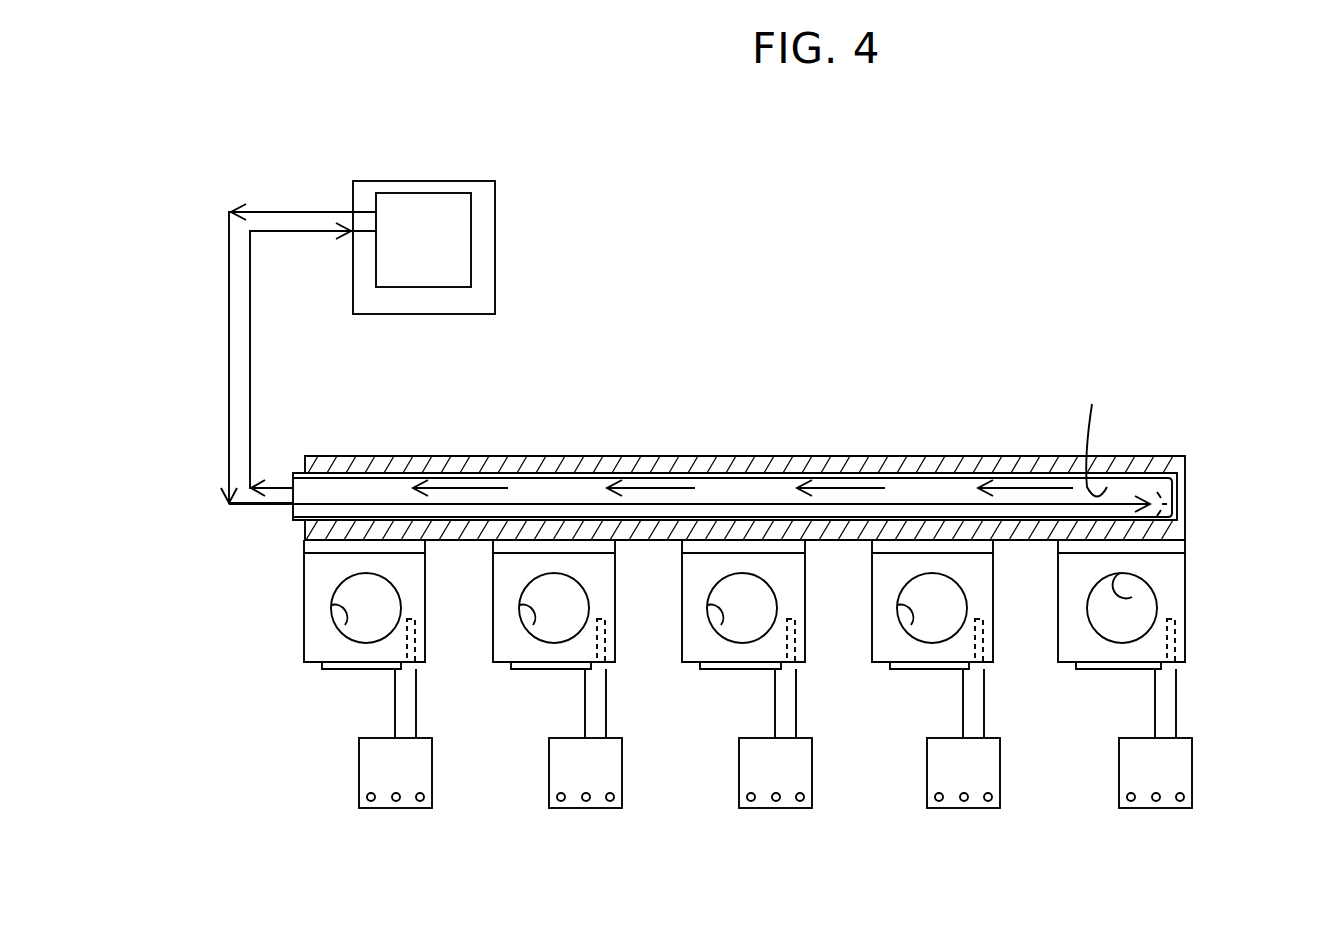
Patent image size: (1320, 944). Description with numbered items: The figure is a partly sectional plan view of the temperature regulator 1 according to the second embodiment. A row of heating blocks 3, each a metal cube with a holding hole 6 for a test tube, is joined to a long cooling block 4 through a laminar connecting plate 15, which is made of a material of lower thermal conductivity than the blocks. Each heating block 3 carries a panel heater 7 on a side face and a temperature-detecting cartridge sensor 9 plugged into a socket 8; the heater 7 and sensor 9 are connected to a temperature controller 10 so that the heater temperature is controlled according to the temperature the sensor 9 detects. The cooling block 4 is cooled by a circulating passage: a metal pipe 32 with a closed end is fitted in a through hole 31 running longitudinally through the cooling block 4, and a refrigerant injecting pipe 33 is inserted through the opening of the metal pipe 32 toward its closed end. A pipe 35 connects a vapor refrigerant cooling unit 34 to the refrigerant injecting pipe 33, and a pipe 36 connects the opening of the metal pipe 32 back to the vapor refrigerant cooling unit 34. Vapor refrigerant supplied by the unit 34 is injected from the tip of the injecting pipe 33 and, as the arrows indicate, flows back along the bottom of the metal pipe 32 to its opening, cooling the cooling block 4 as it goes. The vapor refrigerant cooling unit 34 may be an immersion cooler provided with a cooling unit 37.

The temperature regulator 1 is at (785, 164).
The heating block 3 is at (318, 592).
The cooling block 4 is at (874, 463).
The holding hole 6 is at (346, 624).
The panel heater 7 is at (500, 263).
The socket 8 is at (418, 636).
The temperature-detecting cartridge sensor 9 is at (413, 656).
The temperature controller 10 is at (383, 803).
The connecting plate 15 is at (313, 546).
The through hole 31 is at (1084, 435).
The metal pipe 32 is at (707, 477).
The refrigerant injecting pipe 33 is at (571, 504).
The vapor refrigerant cooling unit 34 is at (462, 315).
The pipe 35 is at (229, 411).
The pipe 36 is at (250, 370).
The cooling unit 37 is at (463, 217).